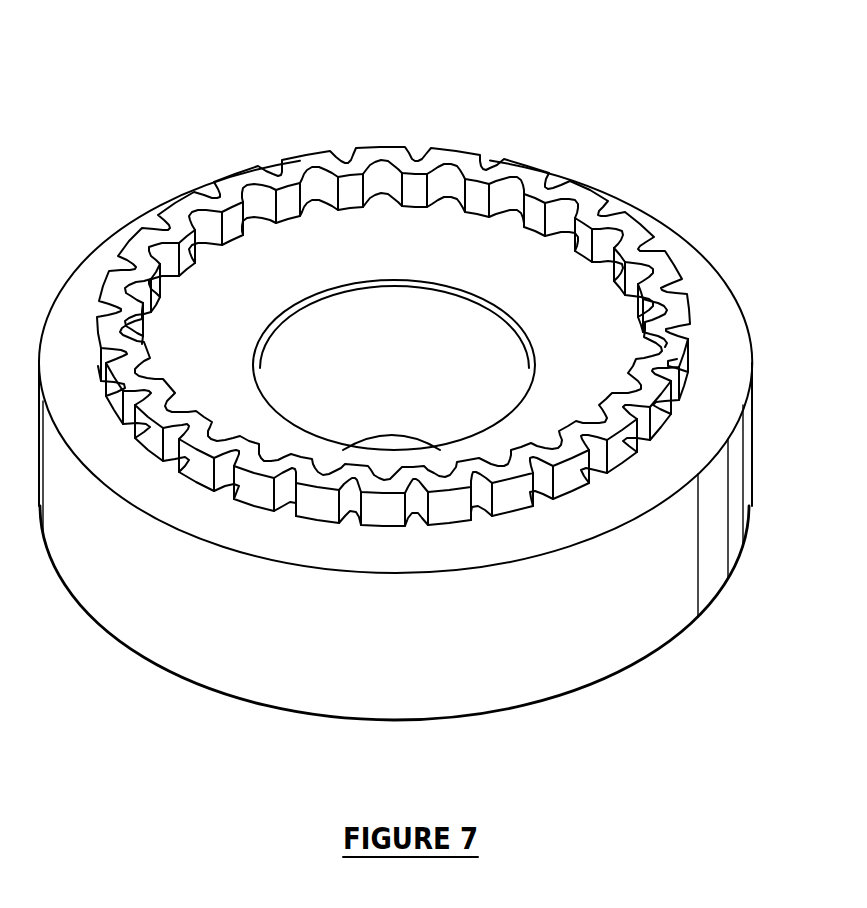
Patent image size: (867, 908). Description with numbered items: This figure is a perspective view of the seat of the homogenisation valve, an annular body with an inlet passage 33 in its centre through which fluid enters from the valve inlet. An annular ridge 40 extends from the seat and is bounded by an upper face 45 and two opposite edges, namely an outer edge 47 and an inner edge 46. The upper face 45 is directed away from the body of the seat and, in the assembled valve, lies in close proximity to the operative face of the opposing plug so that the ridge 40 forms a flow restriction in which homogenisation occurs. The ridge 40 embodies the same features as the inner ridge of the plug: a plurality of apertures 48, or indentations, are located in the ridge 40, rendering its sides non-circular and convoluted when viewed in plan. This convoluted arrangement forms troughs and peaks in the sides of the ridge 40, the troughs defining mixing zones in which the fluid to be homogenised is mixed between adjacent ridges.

The annular ridge 40 is at (672, 117).
The inlet passage 33 is at (393, 372).
The upper face 45 is at (664, 282).
The inner edge 46 is at (630, 242).
The outer edge 47 is at (617, 457).
The apertures 48 is at (547, 488).